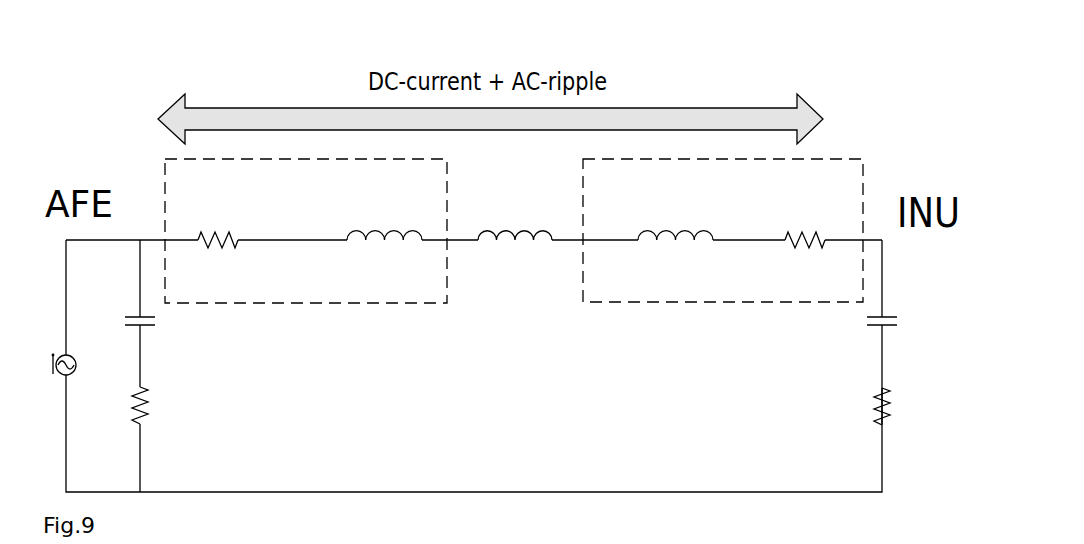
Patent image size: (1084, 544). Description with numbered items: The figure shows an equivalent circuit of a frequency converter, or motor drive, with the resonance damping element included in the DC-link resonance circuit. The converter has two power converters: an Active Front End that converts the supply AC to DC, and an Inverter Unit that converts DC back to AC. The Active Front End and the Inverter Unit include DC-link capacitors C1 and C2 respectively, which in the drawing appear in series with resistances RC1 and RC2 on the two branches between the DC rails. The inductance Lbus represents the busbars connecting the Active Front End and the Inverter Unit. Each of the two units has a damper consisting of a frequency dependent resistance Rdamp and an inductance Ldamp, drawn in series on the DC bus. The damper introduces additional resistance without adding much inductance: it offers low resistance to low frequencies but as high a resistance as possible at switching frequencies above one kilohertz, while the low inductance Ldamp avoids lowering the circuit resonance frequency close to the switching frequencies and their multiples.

The AC source AC is at (83, 365).
The DC-link capacitor of the AFE C1 is at (157, 330).
The first capacitor series resistance RC1 is at (167, 405).
The DC-link capacitor of the INU C2 is at (862, 329).
The second capacitor series resistance RC2 is at (856, 406).
The frequency dependent resistance Rdamp is at (513, 262).
The inductance of the damper Ldamp is at (530, 216).
The inductance of the busbars Lbus is at (515, 216).